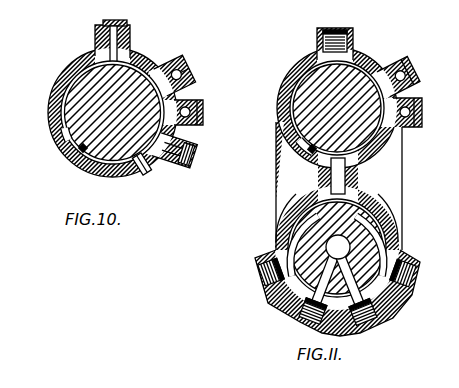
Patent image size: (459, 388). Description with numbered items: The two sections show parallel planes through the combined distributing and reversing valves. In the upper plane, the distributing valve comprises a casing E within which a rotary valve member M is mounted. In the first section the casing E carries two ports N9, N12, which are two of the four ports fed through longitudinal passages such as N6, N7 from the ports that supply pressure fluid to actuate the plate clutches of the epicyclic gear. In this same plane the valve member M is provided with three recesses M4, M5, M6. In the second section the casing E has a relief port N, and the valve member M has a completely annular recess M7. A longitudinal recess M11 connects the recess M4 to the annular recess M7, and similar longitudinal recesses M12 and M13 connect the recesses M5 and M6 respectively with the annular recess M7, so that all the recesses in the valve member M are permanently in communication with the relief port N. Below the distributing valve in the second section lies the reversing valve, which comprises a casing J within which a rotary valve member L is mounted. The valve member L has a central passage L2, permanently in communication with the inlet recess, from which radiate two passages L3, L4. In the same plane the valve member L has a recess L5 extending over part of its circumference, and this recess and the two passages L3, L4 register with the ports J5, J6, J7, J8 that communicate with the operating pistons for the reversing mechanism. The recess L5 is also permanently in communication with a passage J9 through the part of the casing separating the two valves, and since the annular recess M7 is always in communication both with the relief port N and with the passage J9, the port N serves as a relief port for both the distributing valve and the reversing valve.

In FIG. 10, the casing E is at (66, 74).
In FIG. 11, the casing E is at (302, 70).
In FIG. 10, the port N9 is at (113, 50).
In FIG. 10, the recess M4 is at (135, 56).
In FIG. 10, the longitudinal recess M11 is at (150, 80).
In FIG. 11, the longitudinal recess M11 is at (380, 70).
In FIG. 10, the longitudinal passage N6 is at (190, 62).
In FIG. 10, the longitudinal passage N7 is at (203, 104).
In FIG. 10, the port N12 is at (195, 145).
In FIG. 10, the recess M6 is at (59, 143).
In FIG. 10, the longitudinal recess M13 is at (82, 153).
In FIG. 11, the longitudinal recess M13 is at (306, 150).
In FIG. 10, the recess M5 is at (147, 168).
In FIG. 11, the relief port N is at (353, 54).
In FIG. 11, the annular recess M7 is at (302, 78).
In FIG. 11, the rotary valve member M is at (413, 91).
In FIG. 11, the longitudinal recess M12 is at (404, 140).
In FIG. 11, the passage J9 is at (346, 182).
In FIG. 11, the casing J is at (294, 202).
In FIG. 11, the recess L5 is at (368, 212).
In FIG. 11, the central passage L2 is at (312, 238).
In FIG. 11, the rotary valve member L is at (405, 229).
In FIG. 11, the port J5 is at (262, 254).
In FIG. 11, the port J8 is at (415, 272).
In FIG. 11, the passage L3 is at (326, 293).
In FIG. 11, the passage L4 is at (350, 290).
In FIG. 11, the port J6 is at (284, 311).
In FIG. 11, the port J7 is at (392, 318).